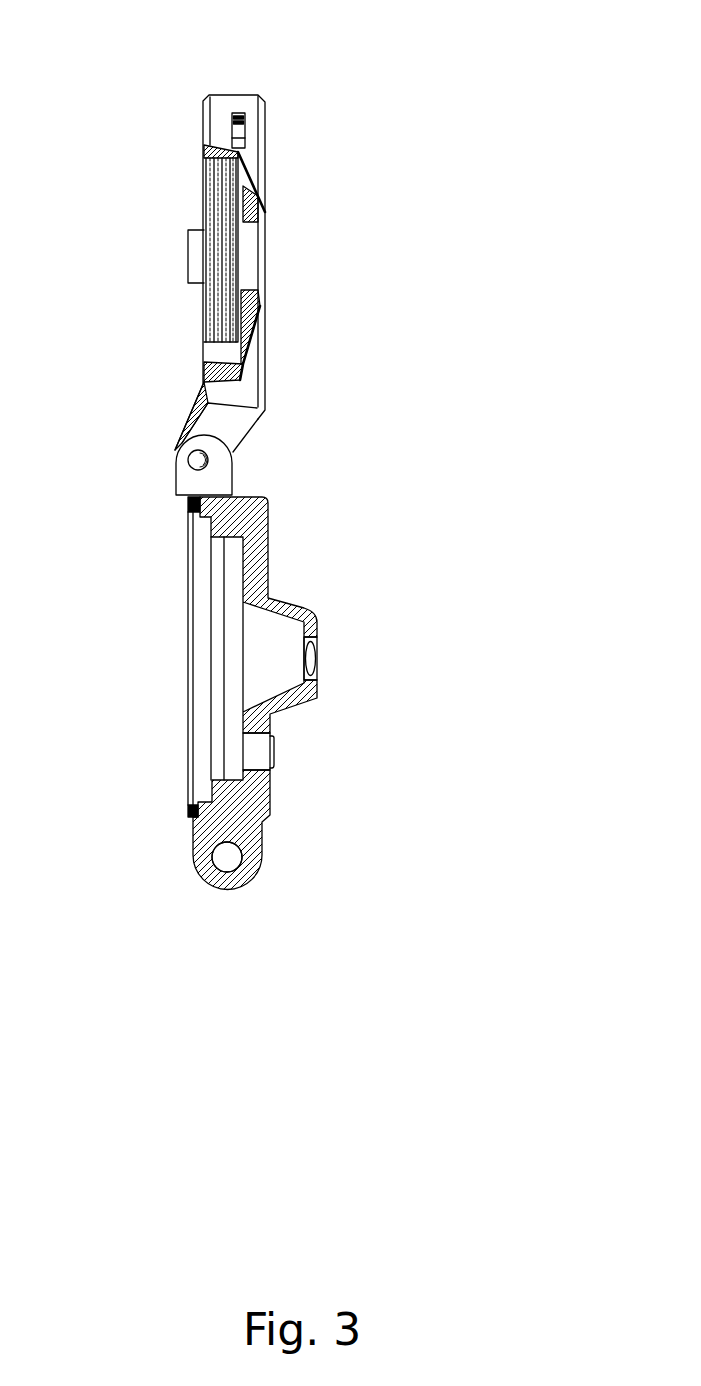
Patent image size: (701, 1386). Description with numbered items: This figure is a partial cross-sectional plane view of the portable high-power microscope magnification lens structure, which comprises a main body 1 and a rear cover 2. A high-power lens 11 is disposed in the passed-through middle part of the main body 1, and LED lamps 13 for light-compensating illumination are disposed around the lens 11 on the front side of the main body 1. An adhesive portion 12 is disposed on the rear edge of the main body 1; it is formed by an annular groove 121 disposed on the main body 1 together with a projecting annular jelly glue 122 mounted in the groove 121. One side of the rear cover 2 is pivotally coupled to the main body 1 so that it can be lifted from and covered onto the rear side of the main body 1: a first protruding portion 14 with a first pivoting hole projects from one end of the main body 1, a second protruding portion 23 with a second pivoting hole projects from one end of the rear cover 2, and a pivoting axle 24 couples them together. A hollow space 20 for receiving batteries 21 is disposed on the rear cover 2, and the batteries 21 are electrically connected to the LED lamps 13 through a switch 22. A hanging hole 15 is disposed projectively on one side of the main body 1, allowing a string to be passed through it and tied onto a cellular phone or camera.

The main body 1 is at (268, 567).
The high-power lens 11 is at (320, 657).
The adhesive portion 12 is at (190, 665).
The annular groove 121 is at (193, 835).
The annular jelly glue 122 is at (190, 810).
The LED lamps 13 is at (272, 752).
The first protruding portion 14 is at (237, 477).
The hanging hole 15 is at (232, 857).
The rear cover 2 is at (265, 120).
The hollow space 20 is at (213, 352).
The batteries 21 is at (212, 177).
The switch 22 is at (238, 112).
The second protruding portion 23 is at (248, 428).
The pivot hole 24 is at (190, 463).